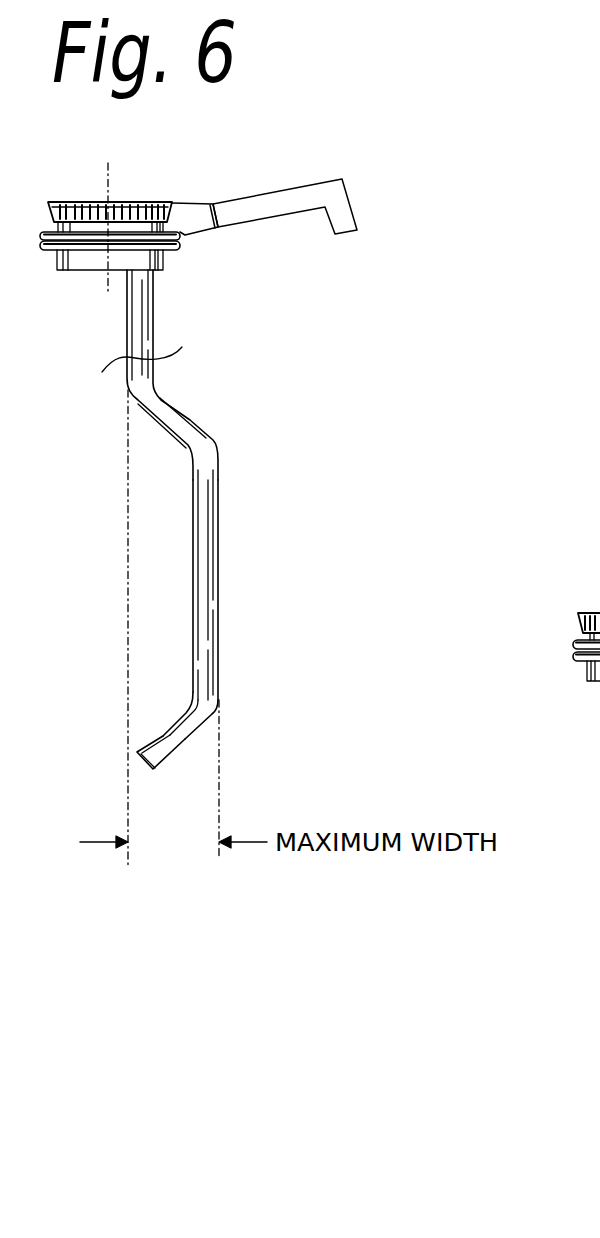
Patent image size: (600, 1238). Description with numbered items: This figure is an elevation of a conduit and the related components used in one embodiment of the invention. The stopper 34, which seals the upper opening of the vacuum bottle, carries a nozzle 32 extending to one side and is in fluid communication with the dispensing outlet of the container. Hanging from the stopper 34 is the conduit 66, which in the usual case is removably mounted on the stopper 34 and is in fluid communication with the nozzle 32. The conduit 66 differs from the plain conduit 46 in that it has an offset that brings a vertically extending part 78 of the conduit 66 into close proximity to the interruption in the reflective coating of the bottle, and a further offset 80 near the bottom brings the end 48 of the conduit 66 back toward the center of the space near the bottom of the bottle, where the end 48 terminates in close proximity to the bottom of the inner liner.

The stopper 34 is at (145, 203).
The nozzle 32 is at (270, 205).
The vertically extending part 78 is at (177, 417).
The conduit 66 is at (210, 498).
The further offset 80 is at (180, 737).
The end 48 is at (140, 762).
The conduit 46 is at (586, 788).